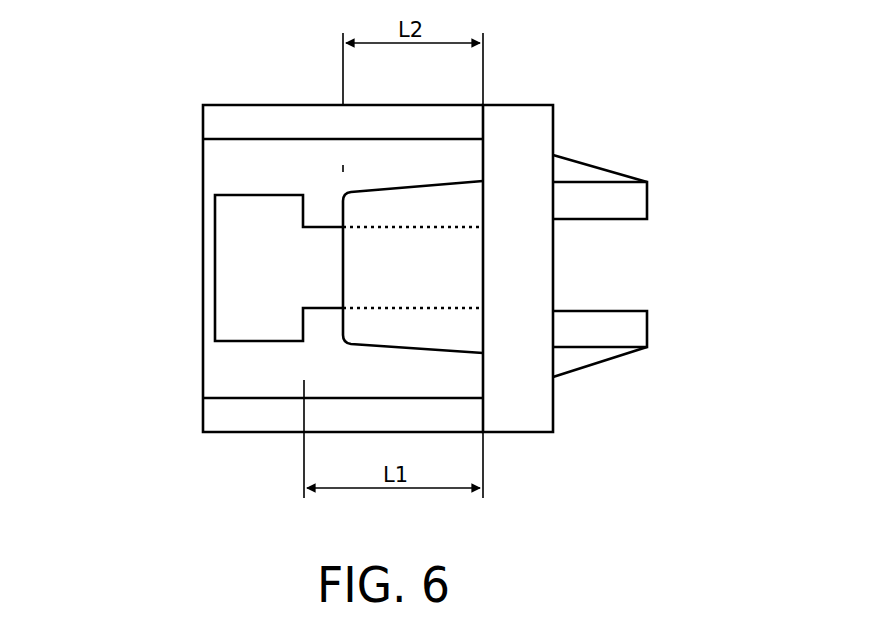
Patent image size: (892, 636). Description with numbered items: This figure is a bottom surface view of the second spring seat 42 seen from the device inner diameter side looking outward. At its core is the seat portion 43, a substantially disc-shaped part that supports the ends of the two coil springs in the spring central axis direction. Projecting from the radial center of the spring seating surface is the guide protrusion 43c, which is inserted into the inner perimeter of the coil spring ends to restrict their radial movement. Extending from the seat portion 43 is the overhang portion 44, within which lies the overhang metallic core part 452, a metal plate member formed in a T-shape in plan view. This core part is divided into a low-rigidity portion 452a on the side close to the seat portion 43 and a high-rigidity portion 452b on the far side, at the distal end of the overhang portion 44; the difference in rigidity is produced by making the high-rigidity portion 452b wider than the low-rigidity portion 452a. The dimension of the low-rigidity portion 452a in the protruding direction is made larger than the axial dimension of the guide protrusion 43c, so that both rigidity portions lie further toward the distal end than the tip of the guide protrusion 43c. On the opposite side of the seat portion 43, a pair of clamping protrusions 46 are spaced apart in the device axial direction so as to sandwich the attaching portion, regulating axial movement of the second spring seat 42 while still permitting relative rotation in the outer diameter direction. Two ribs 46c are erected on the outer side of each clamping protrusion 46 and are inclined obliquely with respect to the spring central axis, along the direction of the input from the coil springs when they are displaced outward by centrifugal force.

The second spring seat 42 is at (511, 101).
The seat portion 43 is at (555, 275).
The guide protrusion 43c is at (357, 328).
The overhang portion 44 is at (198, 416).
The clamping protrusion 46 is at (650, 200).
The rib 46c is at (583, 160).
The overhang metallic core part 452 is at (213, 258).
The low-rigidity portion 452a is at (317, 253).
The high-rigidity portion 452b is at (258, 208).